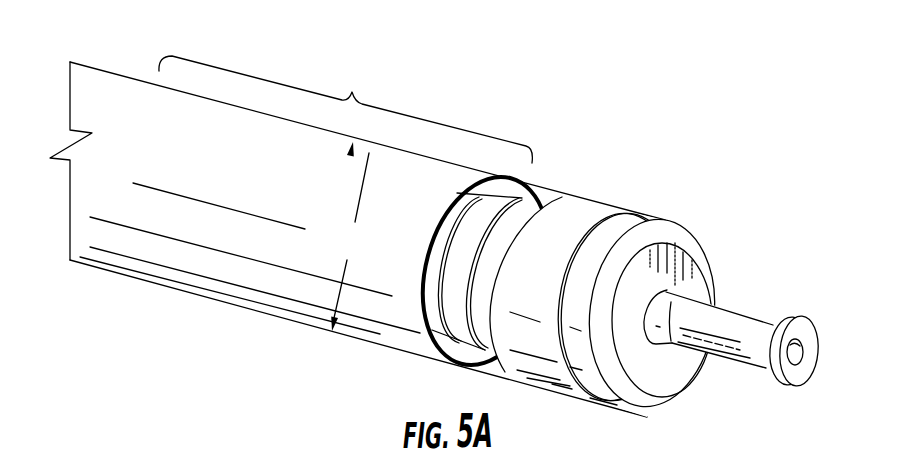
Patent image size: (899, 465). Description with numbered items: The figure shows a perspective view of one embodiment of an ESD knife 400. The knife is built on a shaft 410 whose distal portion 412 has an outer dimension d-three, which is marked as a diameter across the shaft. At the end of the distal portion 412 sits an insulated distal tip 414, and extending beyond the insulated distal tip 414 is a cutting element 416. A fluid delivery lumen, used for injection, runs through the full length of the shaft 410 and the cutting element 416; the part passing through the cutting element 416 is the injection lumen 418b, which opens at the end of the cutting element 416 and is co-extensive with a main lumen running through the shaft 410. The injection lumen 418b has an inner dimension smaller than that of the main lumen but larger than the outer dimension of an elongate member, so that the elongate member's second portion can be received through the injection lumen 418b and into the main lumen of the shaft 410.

The ESD knife 400 is at (451, 218).
The shaft 410 is at (80, 250).
The distal portion 412 is at (345, 109).
The insulated distal tip 414 is at (620, 229).
The cutting element 416 is at (734, 320).
The injection lumen 418b is at (806, 354).